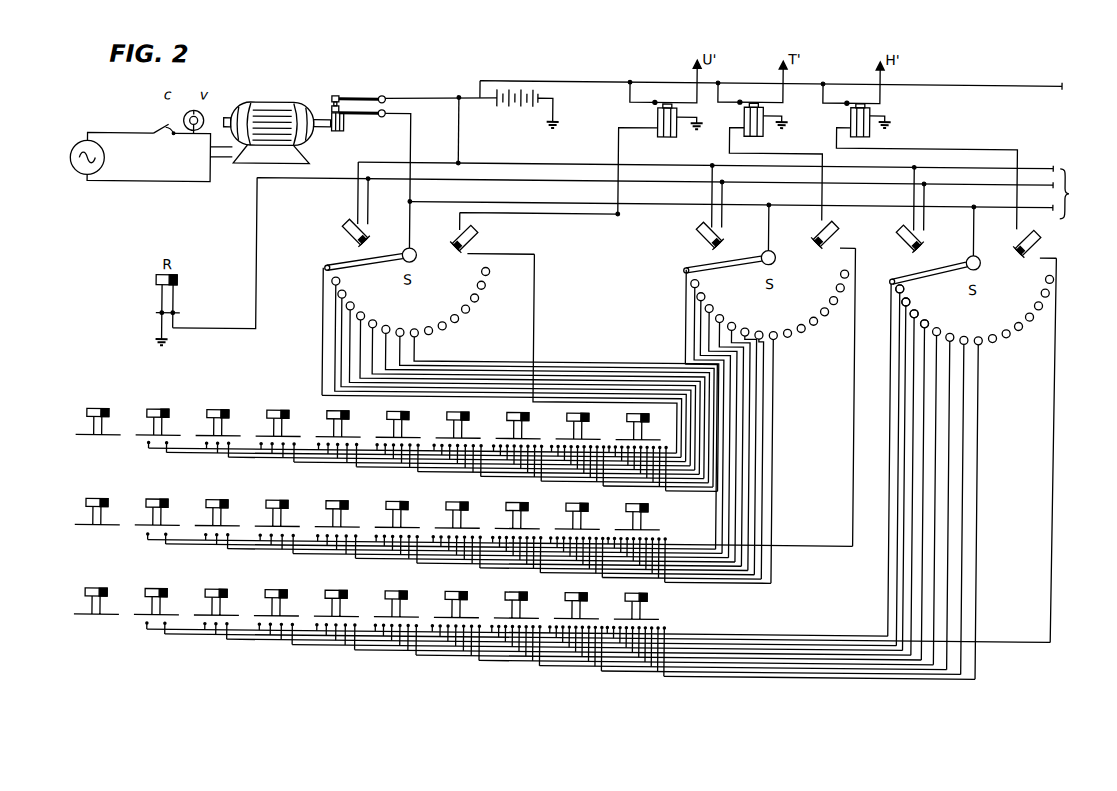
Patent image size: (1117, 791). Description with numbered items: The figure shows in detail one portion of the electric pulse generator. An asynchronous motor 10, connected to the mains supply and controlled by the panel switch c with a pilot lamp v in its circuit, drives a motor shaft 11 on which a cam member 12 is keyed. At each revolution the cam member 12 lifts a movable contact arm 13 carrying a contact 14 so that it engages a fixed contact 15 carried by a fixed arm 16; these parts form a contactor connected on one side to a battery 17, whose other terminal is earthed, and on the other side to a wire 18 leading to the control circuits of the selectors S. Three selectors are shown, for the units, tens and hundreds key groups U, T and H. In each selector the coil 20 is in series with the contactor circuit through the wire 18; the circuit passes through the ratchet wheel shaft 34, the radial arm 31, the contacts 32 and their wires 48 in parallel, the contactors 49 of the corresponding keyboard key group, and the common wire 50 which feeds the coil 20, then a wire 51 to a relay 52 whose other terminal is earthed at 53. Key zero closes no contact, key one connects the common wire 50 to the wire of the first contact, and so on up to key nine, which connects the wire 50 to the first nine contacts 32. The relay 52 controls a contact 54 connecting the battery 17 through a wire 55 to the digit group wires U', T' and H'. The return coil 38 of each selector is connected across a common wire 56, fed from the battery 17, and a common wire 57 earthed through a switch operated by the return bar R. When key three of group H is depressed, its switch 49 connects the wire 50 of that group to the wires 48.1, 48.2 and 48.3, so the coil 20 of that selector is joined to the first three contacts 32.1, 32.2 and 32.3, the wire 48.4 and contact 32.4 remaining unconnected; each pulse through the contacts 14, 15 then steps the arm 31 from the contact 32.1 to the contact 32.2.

The asynchronous motor 10 is at (269, 105).
The motor shaft 11 is at (321, 130).
The cam member 12 is at (337, 133).
The movable contact arm 13 is at (355, 113).
The contact 14 is at (329, 100).
The fixed contact 15 is at (334, 108).
The fixed arm 16 is at (358, 98).
The battery 17 is at (512, 108).
The wire 18 is at (641, 205).
The coil 20 is at (478, 233).
The radial arm 31 is at (368, 266).
The contacts 32 is at (354, 307).
The first contact 32.1 is at (898, 280).
The second contact 32.2 is at (908, 290).
The third contact 32.3 is at (917, 305).
The fourth contact 32.4 is at (928, 318).
The ratchet wheel shaft 34 is at (415, 251).
The return coil 38 is at (341, 235).
The wires 48 is at (345, 345).
The wire 48.1 is at (197, 636).
The wire 48.2 is at (254, 645).
The wire 48.3 is at (317, 649).
The wire 48.4 is at (377, 653).
The contactors 49 is at (316, 440).
The common wire 50 is at (535, 296).
The wire 51 is at (577, 214).
The relay 52 is at (655, 135).
The earth connection 53 is at (698, 125).
The contact 54 is at (652, 100).
The wire 55 is at (565, 81).
The common wire 56 is at (538, 163).
The common wire 57 is at (565, 180).